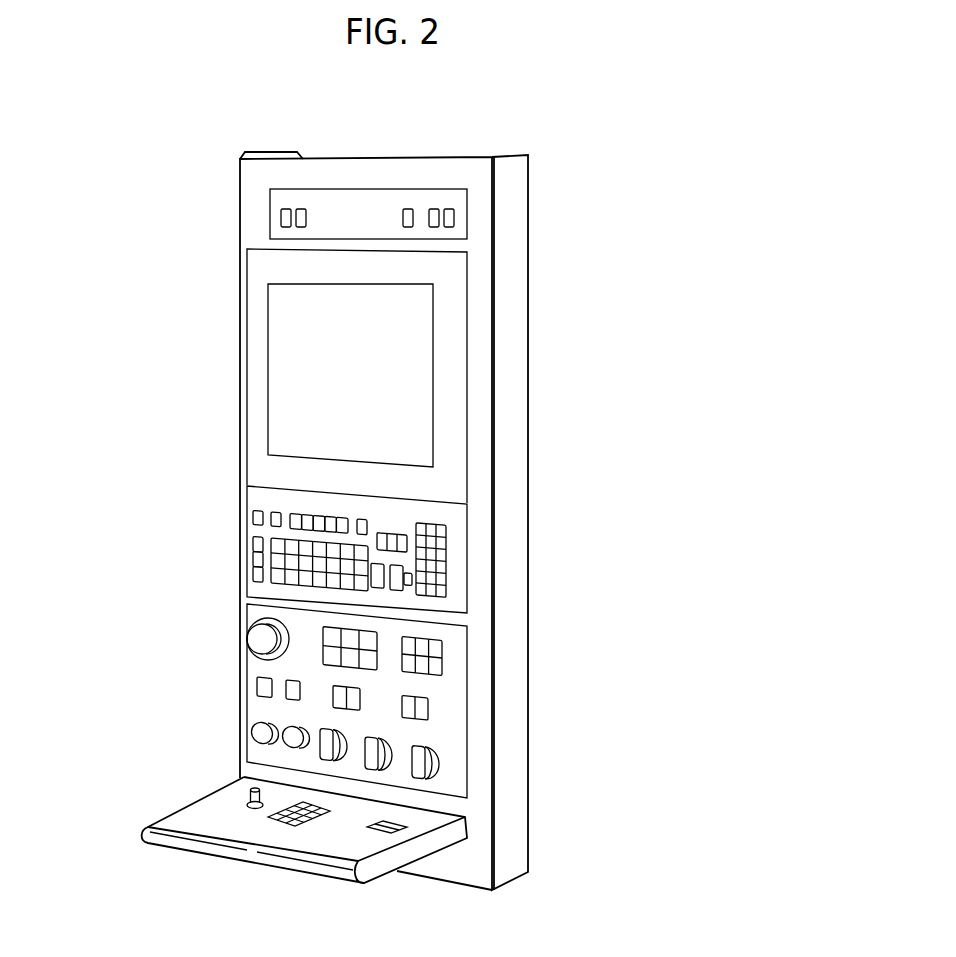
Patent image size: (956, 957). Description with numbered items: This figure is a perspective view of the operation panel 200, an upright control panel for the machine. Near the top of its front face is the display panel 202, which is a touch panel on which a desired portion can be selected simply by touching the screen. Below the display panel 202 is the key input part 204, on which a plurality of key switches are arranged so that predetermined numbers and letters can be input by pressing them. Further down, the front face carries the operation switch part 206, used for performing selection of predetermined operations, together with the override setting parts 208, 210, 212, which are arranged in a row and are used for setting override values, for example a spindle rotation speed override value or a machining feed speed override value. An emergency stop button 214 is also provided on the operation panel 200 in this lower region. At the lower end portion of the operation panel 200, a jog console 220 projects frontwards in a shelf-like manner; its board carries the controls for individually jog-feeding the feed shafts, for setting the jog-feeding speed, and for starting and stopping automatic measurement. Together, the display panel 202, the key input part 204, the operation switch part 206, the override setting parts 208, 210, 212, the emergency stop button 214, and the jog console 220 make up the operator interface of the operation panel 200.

The operation panel 200 is at (583, 205).
The display panel 202 is at (393, 370).
The key input part 204 is at (453, 553).
The operation switch part 206 is at (452, 665).
The override setting part 208 is at (330, 737).
The override setting part 210 is at (380, 744).
The override setting part 212 is at (421, 755).
The emergency stop button 214 is at (245, 642).
The jog console 220 is at (186, 793).